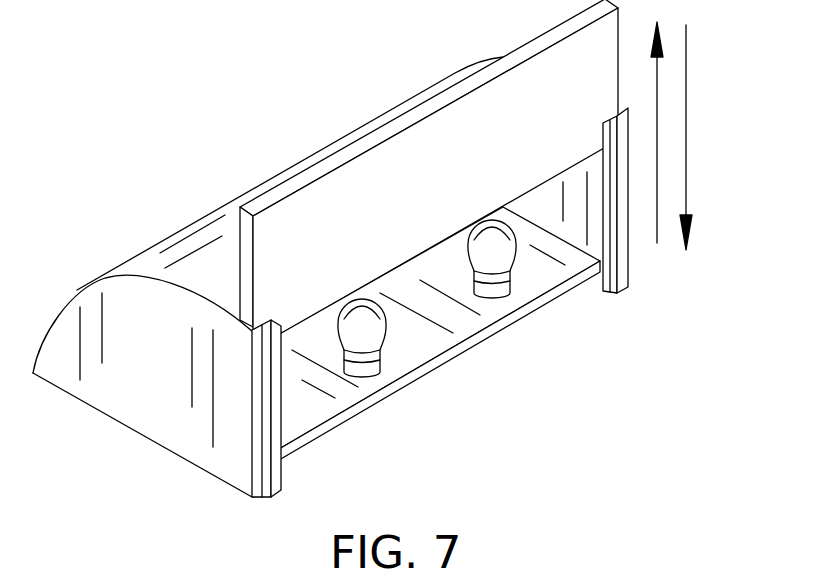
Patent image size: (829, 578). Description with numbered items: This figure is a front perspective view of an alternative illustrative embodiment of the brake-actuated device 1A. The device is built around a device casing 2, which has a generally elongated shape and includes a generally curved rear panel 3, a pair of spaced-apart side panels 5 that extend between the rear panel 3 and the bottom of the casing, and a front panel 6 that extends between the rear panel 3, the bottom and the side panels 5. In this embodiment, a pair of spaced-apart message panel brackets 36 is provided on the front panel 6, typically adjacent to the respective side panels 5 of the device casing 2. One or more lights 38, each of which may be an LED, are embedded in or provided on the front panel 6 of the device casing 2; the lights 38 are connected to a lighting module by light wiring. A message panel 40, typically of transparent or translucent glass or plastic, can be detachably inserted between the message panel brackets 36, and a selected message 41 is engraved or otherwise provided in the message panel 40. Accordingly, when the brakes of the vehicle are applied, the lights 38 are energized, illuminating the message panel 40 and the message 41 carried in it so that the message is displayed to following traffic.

The brake-actuated device 1A is at (250, 82).
The device casing 2 is at (171, 476).
The rear panel 3 is at (160, 252).
The side panels 5 is at (97, 387).
The front panel 6 is at (341, 394).
The message panel brackets 36 is at (233, 517).
The lights 38 is at (477, 259).
The message panel 40 is at (370, 143).
The message 41 is at (530, 100).